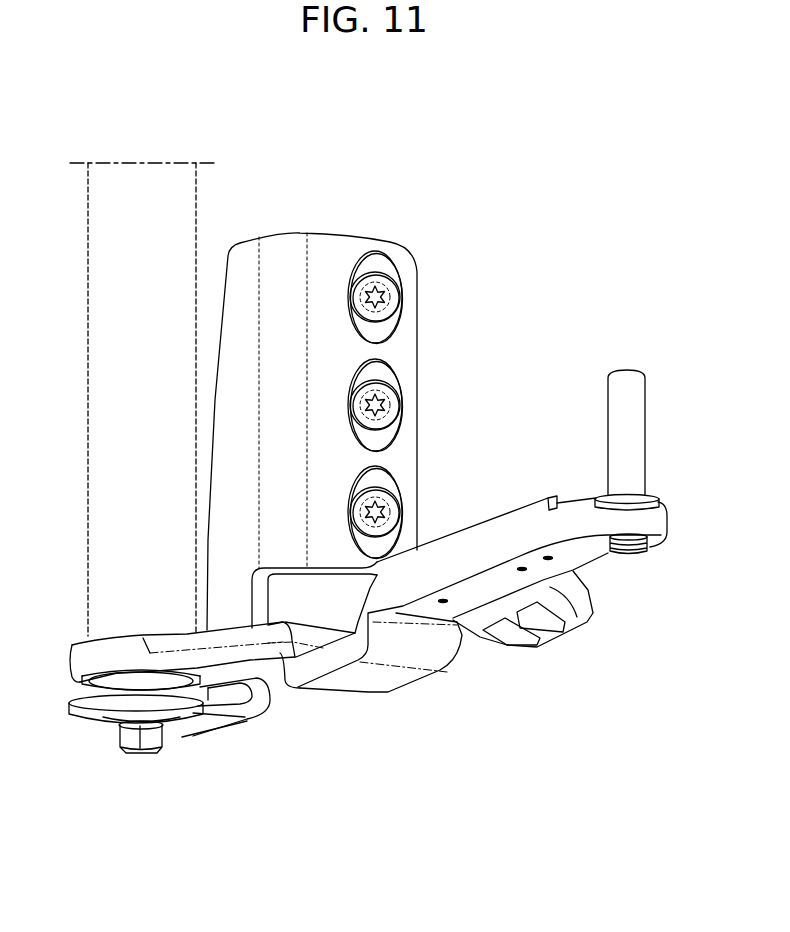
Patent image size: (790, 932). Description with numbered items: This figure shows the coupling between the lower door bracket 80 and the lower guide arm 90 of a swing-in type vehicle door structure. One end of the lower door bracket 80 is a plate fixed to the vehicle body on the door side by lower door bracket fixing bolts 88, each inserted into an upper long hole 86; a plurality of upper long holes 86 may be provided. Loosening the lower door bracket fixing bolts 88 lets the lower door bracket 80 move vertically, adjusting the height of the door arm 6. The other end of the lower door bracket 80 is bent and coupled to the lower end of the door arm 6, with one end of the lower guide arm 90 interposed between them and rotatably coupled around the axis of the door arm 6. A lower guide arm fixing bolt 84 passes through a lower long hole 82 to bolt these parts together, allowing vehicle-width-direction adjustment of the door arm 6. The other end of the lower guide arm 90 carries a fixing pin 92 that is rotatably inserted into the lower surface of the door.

The door arm 6 is at (96, 433).
The lower door bracket 80 is at (328, 247).
The lower long hole 82 is at (117, 728).
The lower guide arm fixing bolt 84 is at (143, 754).
The upper long hole 86 is at (370, 384).
The lower door bracket fixing bolt 88 is at (385, 398).
The lower guide arm 90 is at (493, 528).
The fixing pin 92 is at (638, 435).